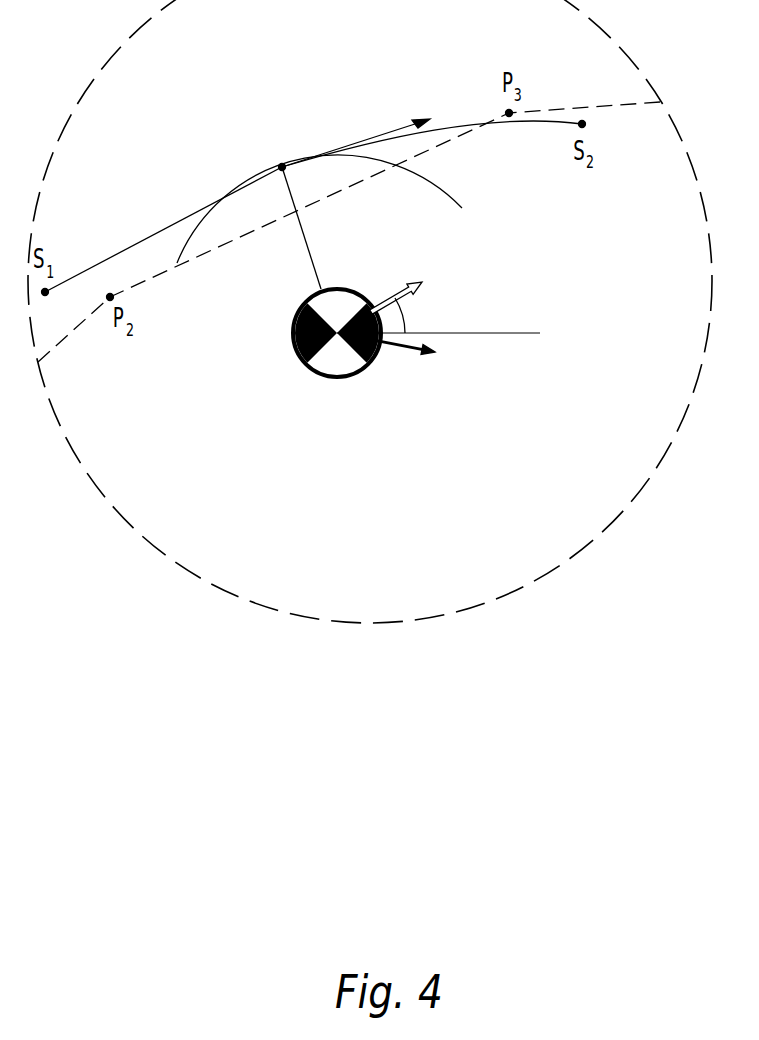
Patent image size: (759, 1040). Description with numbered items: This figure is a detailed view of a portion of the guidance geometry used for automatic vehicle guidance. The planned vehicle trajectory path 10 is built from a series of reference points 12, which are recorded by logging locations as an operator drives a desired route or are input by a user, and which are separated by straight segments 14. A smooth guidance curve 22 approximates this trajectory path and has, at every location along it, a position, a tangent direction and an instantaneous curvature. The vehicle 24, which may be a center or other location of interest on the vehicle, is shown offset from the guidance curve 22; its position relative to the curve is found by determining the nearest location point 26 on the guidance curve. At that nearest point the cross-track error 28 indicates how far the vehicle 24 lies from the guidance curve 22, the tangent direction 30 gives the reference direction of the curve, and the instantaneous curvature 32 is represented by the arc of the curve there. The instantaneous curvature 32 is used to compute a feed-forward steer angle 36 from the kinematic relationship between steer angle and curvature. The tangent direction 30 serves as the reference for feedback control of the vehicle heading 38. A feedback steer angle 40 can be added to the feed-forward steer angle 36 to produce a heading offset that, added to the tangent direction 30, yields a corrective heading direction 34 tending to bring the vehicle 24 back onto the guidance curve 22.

The vehicle trajectory path 10 is at (440, 159).
The reference points 12 is at (107, 296).
The segments 14 is at (142, 263).
The guidance curve 22 is at (163, 172).
The vehicle 24 is at (252, 297).
The nearest location point 26 is at (252, 147).
The cross-track error 28 is at (307, 240).
The tangent direction 30 is at (363, 113).
The instantaneous curvature 32 is at (421, 210).
The corrective heading direction 34 is at (374, 272).
The feed-forward steer angle 36 is at (425, 337).
The vehicle heading 38 is at (382, 386).
The feedback steer angle 40 is at (404, 310).